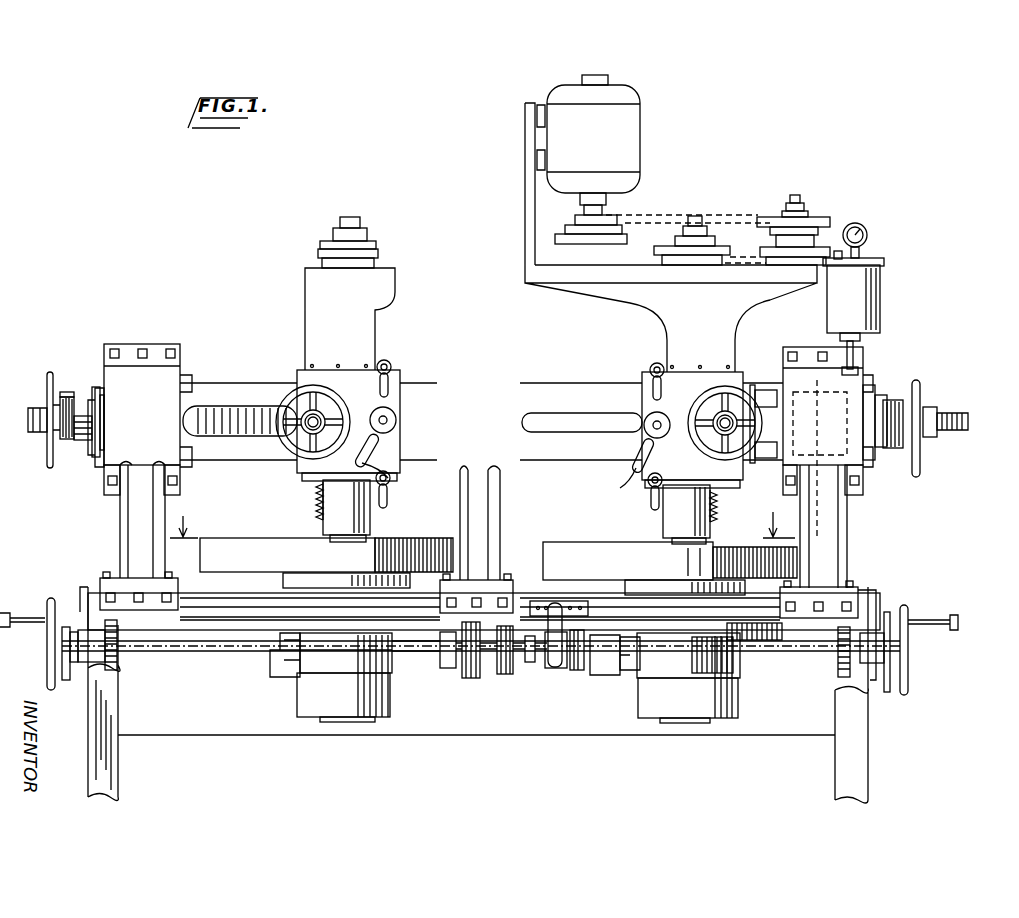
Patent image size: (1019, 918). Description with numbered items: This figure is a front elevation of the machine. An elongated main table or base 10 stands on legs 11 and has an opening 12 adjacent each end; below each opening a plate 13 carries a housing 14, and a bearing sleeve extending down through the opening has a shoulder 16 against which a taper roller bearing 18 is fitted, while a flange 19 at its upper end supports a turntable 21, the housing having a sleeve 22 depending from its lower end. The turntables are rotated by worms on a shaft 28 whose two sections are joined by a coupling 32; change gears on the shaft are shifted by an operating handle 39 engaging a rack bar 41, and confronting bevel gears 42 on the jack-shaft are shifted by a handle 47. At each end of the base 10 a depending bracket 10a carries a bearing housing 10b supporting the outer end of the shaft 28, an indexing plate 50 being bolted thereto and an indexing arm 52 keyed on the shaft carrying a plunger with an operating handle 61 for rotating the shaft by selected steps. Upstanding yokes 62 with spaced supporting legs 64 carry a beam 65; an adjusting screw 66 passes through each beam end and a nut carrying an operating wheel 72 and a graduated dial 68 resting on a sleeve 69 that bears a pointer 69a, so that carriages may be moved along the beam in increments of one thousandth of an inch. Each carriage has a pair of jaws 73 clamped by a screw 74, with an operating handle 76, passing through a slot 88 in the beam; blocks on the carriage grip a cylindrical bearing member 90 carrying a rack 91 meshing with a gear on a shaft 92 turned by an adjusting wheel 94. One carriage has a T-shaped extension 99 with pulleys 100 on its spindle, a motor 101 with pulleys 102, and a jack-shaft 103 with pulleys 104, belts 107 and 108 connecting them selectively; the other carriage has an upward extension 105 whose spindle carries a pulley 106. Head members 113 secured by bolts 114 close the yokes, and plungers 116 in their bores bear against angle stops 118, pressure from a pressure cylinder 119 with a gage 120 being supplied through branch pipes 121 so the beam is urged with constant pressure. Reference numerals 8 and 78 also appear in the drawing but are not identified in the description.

The supply line 8 is at (818, 352).
The main table or base 10 is at (222, 626).
The bracket 10a is at (84, 592).
The bearing housing 10b is at (58, 662).
The legs 11 is at (92, 745).
The opening 12 is at (482, 521).
The plate 13 is at (268, 600).
The housing 14 is at (278, 672).
The shoulder 16 is at (685, 740).
The taper roller bearing 18 is at (694, 640).
The flange 19 is at (312, 566).
The turntable 21 is at (252, 532).
The sleeve 22 is at (300, 690).
The shaft 28 is at (168, 652).
The coupling 32 is at (452, 680).
The operating handle 39 is at (555, 604).
The rack bar 41 is at (580, 606).
The bevel gears 42 is at (470, 680).
The handle 47 is at (470, 616).
The indexing plate 50 is at (72, 672).
The indexing arm 52 is at (48, 600).
The operating handle 61 is at (24, 612).
The yoke 62 is at (130, 530).
The guide members or supporting legs 64 is at (132, 492).
The beam 65 is at (548, 385).
The adjusting screw 66 is at (960, 420).
The graduated dial 68 is at (58, 436).
The sleeve 69 is at (84, 442).
The pointer or index finger 69a is at (88, 400).
The operating wheel 72 is at (46, 376).
The jaws 73 is at (328, 378).
The screw 74 is at (392, 418).
The operating handle 76 is at (499, 479).
The handle 78 is at (390, 362).
The slot 88 is at (556, 434).
The cylindrical bearing member 90 is at (372, 530).
The rack 91 is at (318, 500).
The rotatable shaft 92 is at (322, 414).
The adjusting wheel 94 is at (294, 392).
The T-shaped extension 99 is at (665, 326).
The graduated belt pulleys 100 is at (698, 258).
The motor 101 is at (630, 128).
The graduated belt pulleys 102 is at (592, 244).
The jack-shaft 103 is at (806, 208).
The belt pulleys 104 is at (768, 216).
The upward extension 105 is at (306, 296).
The belt pulley 106 is at (370, 254).
The belt 107 is at (662, 214).
The belt 108 is at (766, 262).
The head member 113 is at (130, 376).
The bolts 114 is at (114, 350).
The plunger 116 is at (820, 406).
The angle stops 118 is at (768, 390).
The pressure cylinder 119 is at (872, 316).
The gage 120 is at (868, 236).
The branch pipes 121 is at (856, 352).